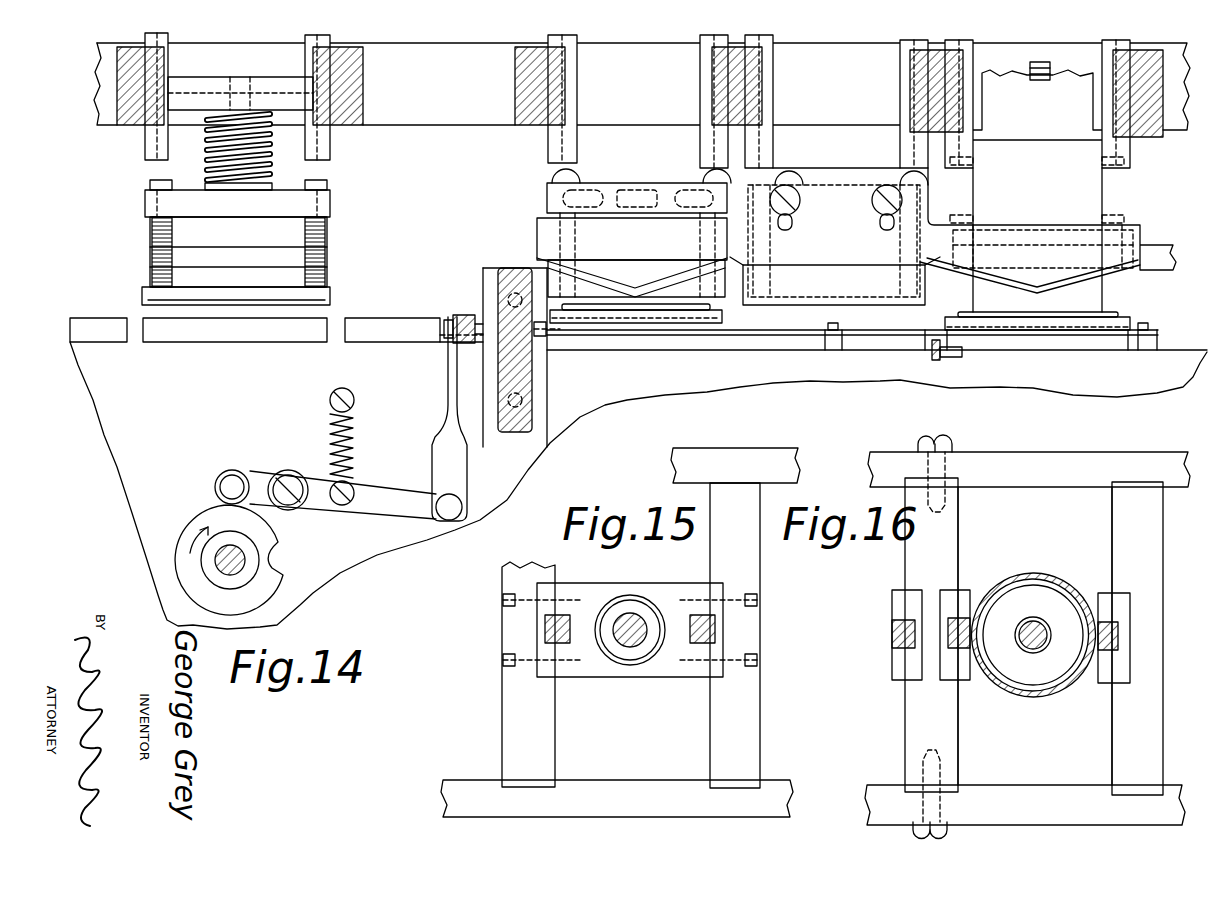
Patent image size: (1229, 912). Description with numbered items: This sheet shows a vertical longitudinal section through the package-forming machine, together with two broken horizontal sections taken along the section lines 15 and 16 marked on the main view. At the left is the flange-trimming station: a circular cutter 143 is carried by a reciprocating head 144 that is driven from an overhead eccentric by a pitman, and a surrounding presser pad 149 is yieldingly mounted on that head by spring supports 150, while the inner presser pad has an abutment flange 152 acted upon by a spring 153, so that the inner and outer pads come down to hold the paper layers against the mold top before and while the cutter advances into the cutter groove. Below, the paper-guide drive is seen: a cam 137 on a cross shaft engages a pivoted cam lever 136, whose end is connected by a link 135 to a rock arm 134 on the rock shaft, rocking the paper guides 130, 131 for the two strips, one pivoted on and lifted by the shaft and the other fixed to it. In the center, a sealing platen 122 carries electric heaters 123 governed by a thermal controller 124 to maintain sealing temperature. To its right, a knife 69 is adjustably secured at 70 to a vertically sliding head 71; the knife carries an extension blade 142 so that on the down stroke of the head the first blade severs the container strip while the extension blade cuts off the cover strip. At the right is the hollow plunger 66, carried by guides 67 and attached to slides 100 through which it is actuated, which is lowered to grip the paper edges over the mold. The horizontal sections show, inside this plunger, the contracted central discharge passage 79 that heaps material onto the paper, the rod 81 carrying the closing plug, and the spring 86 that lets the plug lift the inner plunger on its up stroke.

In FIG. 14, the section line 15— 15 is at (142, 164).
In FIG. 14, the section line 16— 16 is at (892, 158).
In FIG. 14, the hollow plunger 66 is at (1097, 302).
In FIG. 16, the hollow plunger 66 is at (1027, 572).
In FIG. 14, the guides 67 is at (1108, 147).
In FIG. 16, the guides 67 is at (973, 682).
In FIG. 14, the knife 69 is at (1027, 237).
In FIG. 14, the adjustable securing means 70 is at (798, 209).
In FIG. 14, the vertically sliding head 71 is at (817, 188).
In FIG. 16, the central discharge passage 79 is at (1033, 635).
In FIG. 16, the rod 81 is at (1046, 630).
In FIG. 16, the spring 86 is at (1018, 638).
In FIG. 14, the slides 100 is at (1118, 200).
In FIG. 16, the slides 100 is at (1110, 623).
In FIG. 14, the sealing platen 122 is at (546, 193).
In FIG. 14, the electric heater 123 is at (690, 187).
In FIG. 14, the thermal controller 124 is at (628, 190).
In FIG. 14, the paper guide 130 is at (1118, 316).
In FIG. 14, the paper guide 131 is at (722, 313).
In FIG. 14, the rock arm 134 is at (455, 313).
In FIG. 14, the link 135 is at (447, 382).
In FIG. 14, the cam lever 136 is at (390, 507).
In FIG. 14, the cam 137 is at (278, 553).
In FIG. 14, the extension blade 142 is at (632, 255).
In FIG. 14, the circular cutter 143 is at (252, 262).
In FIG. 14, the reciprocating head 144 is at (331, 204).
In FIG. 14, the presser pad 149 is at (331, 297).
In FIG. 14, the spring supports 150 is at (327, 276).
In FIG. 14, the abutment flange 152 is at (258, 190).
In FIG. 14, the spring 153 is at (220, 175).
In FIG. 15, the spring 153 is at (638, 596).